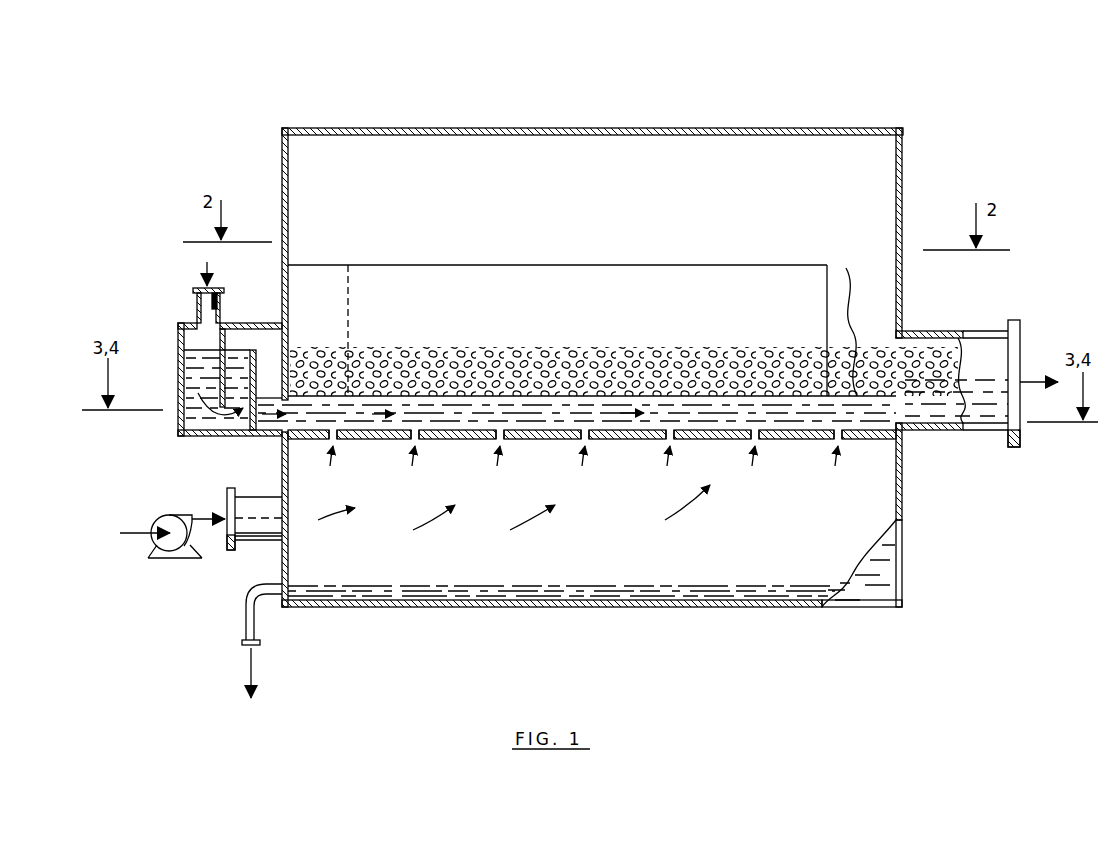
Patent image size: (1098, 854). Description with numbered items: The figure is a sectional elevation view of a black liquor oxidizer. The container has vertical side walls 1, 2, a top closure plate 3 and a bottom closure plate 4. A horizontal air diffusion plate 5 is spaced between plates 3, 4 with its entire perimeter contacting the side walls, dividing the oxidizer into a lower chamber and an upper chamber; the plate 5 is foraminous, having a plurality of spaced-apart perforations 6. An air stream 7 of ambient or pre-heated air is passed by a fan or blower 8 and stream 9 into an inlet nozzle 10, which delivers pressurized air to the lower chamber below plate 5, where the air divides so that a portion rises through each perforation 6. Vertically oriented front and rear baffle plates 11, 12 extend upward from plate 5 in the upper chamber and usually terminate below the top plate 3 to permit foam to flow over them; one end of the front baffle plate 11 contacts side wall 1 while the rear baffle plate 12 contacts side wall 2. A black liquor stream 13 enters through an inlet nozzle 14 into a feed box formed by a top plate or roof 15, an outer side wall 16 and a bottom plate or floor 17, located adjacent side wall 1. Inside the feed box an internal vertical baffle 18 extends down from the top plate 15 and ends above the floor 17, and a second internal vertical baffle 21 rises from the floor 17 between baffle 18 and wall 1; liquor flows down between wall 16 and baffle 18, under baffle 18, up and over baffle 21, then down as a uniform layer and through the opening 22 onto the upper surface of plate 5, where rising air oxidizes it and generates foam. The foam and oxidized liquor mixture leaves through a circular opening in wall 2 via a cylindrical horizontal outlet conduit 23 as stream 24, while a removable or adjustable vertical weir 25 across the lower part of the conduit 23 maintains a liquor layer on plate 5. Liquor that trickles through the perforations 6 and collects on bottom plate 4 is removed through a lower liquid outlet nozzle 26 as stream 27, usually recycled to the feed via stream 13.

The vertical side wall 1 is at (282, 178).
The vertical side wall 2 is at (905, 158).
The top closure plate 3 is at (712, 128).
The bottom closure plate 4 is at (665, 607).
The air diffusion plate 5 is at (542, 440).
The perforations 6 is at (338, 440).
The air stream 7 is at (120, 532).
The fan or blower 8 is at (165, 558).
The air stream 9 is at (208, 521).
The inlet nozzle 10 is at (262, 542).
The front baffle plate 11 is at (595, 268).
The rear baffle plate 12 is at (846, 268).
The black liquor stream 13 is at (206, 270).
The inlet nozzle 14 is at (198, 300).
The top plate or roof 15 is at (237, 323).
The outer side wall 16 is at (178, 420).
The bottom plate or floor 17 is at (205, 437).
The internal vertical baffle 18 is at (220, 340).
The second internal vertical baffle 21 is at (256, 365).
The opening 22 is at (288, 404).
The outlet conduit 23 is at (983, 431).
The stream 24 is at (1020, 382).
The vertical weir 25 is at (956, 398).
The lower liquid outlet nozzle 26 is at (255, 623).
The stream 27 is at (256, 664).